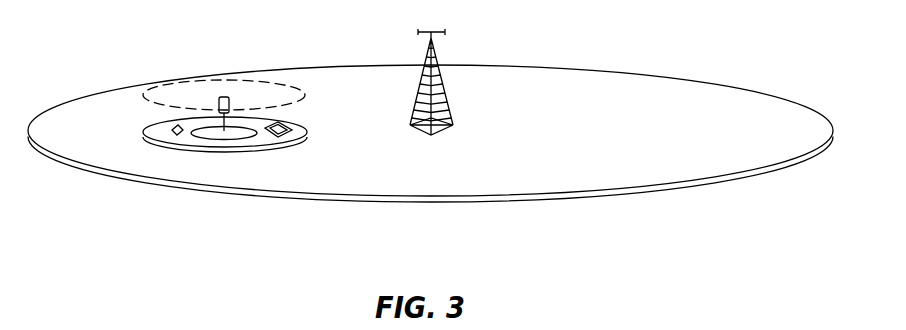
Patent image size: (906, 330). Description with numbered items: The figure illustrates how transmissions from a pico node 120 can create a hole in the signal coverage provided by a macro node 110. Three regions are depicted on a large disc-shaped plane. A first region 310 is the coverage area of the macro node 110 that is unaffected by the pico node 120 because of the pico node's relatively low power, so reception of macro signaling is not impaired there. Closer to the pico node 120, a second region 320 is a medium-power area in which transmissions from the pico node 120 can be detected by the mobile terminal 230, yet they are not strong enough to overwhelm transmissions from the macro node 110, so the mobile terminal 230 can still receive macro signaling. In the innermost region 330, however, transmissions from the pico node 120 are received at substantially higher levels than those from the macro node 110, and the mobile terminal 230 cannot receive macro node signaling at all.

The macro node 110 is at (437, 54).
The pico node 120 is at (230, 101).
The mobile terminal 230 is at (293, 129).
The first region 310 is at (651, 140).
The second region 320 is at (176, 128).
The third region 330 is at (212, 137).